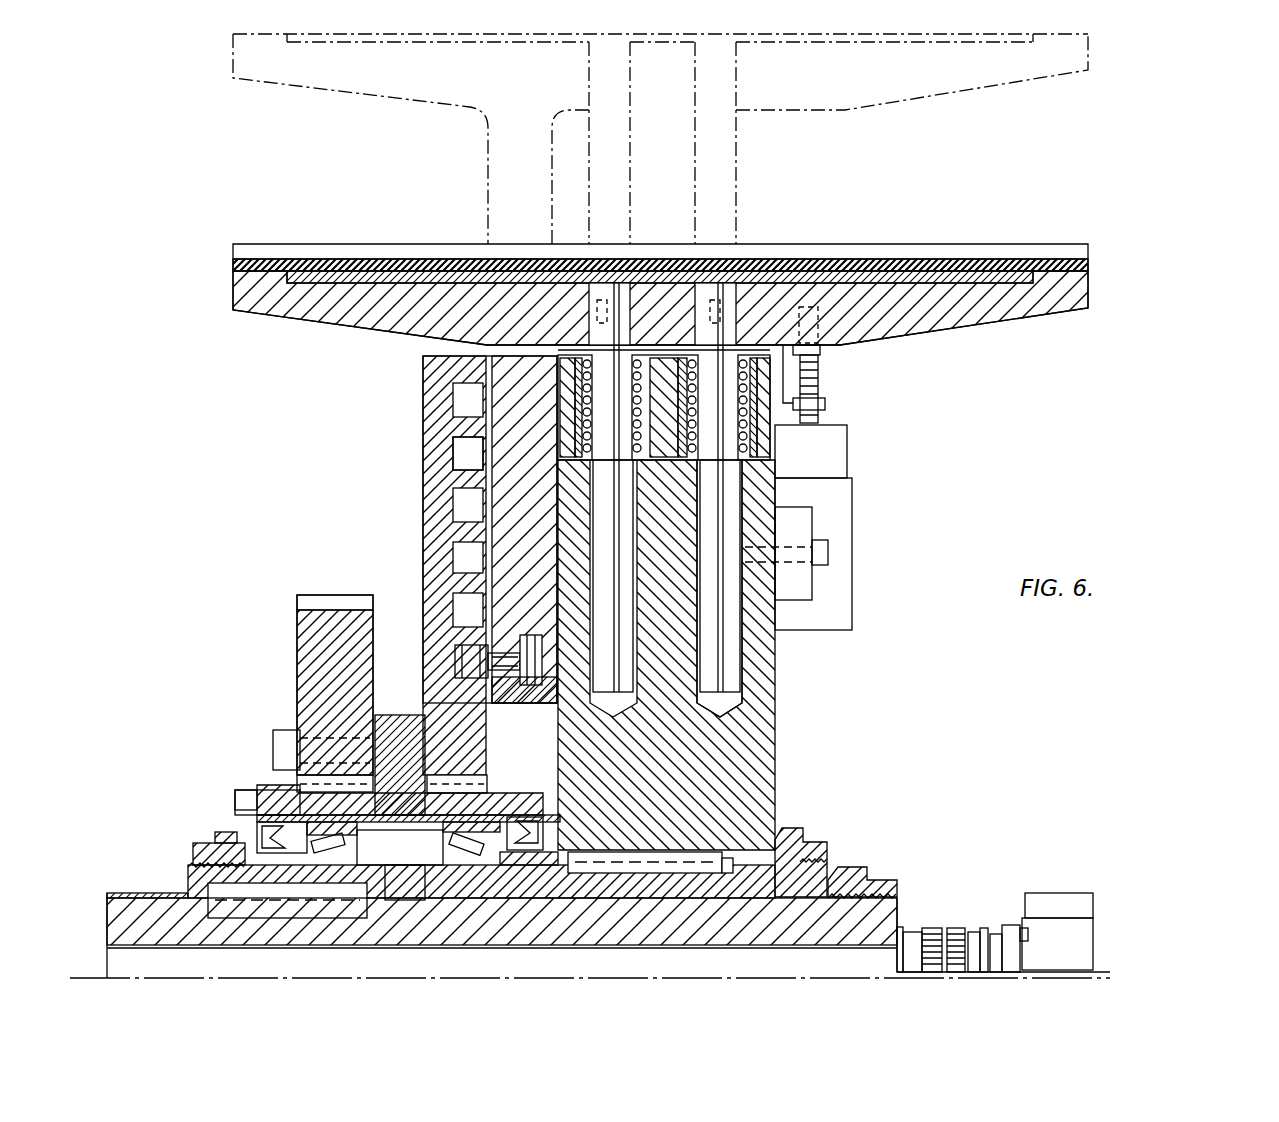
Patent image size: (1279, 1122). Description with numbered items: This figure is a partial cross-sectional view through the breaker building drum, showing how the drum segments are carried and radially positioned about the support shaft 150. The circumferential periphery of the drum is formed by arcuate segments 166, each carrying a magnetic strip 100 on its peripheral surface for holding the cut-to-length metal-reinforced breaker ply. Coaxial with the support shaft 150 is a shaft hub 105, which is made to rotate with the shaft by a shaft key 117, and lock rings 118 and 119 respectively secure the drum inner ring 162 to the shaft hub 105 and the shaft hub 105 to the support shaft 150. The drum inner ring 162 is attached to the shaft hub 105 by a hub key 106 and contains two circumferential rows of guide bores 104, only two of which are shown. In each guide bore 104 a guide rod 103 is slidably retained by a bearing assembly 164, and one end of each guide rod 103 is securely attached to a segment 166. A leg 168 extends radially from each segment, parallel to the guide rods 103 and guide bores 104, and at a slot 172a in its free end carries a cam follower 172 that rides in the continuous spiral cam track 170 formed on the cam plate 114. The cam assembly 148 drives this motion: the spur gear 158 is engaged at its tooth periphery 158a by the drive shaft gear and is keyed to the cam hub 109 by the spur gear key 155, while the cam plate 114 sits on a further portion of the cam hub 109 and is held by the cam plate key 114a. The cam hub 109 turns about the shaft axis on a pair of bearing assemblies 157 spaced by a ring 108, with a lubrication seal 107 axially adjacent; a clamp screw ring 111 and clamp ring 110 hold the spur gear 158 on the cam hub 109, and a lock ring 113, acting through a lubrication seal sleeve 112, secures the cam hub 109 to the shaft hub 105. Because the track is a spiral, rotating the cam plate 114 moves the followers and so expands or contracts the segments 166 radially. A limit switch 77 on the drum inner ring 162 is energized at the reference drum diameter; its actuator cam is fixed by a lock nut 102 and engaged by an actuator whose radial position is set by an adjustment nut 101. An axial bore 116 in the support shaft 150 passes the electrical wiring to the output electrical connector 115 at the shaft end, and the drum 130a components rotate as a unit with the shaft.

The magnetic strip 100 is at (955, 33).
The arcuate segment 166 is at (1068, 65).
The bearing assembly 164 is at (578, 366).
The drum inner ring 162 is at (765, 652).
The guide rod 103 is at (737, 680).
The guide bore 104 is at (740, 700).
The leg 168 is at (498, 423).
The cam plate 114 is at (428, 398).
The spiral cam track 170 is at (455, 447).
The cam plate key 114a is at (487, 782).
The cam assembly 148 is at (388, 484).
The cam follower 172 is at (458, 658).
The slot 172a is at (546, 688).
The adjustment nut 101 is at (822, 352).
The lock nut 102 is at (826, 405).
The limit switch 77 is at (852, 490).
The spur gear 158 is at (297, 628).
The tooth periphery 158a is at (347, 595).
The cam hub 109 is at (397, 715).
The spur gear key 155 is at (300, 775).
The clamp ring 110 is at (263, 787).
The lubrication seal 107 is at (250, 810).
The clamp screw ring 111 is at (240, 805).
The lubrication seal sleeve 112 is at (255, 840).
The bearing assembly 157 is at (375, 843).
The ring 108 is at (450, 841).
The lock ring 113 is at (195, 852).
The shaft hub 105 is at (192, 872).
The shaft key 117 is at (220, 905).
The hub key 106 is at (712, 855).
The lock ring 118 is at (805, 830).
The lock ring 119 is at (875, 888).
The axial bore 116 is at (118, 965).
The support shaft 150 is at (110, 917).
The drive shaft 130a is at (1113, 970).
The output electrical connector 115 is at (1085, 918).